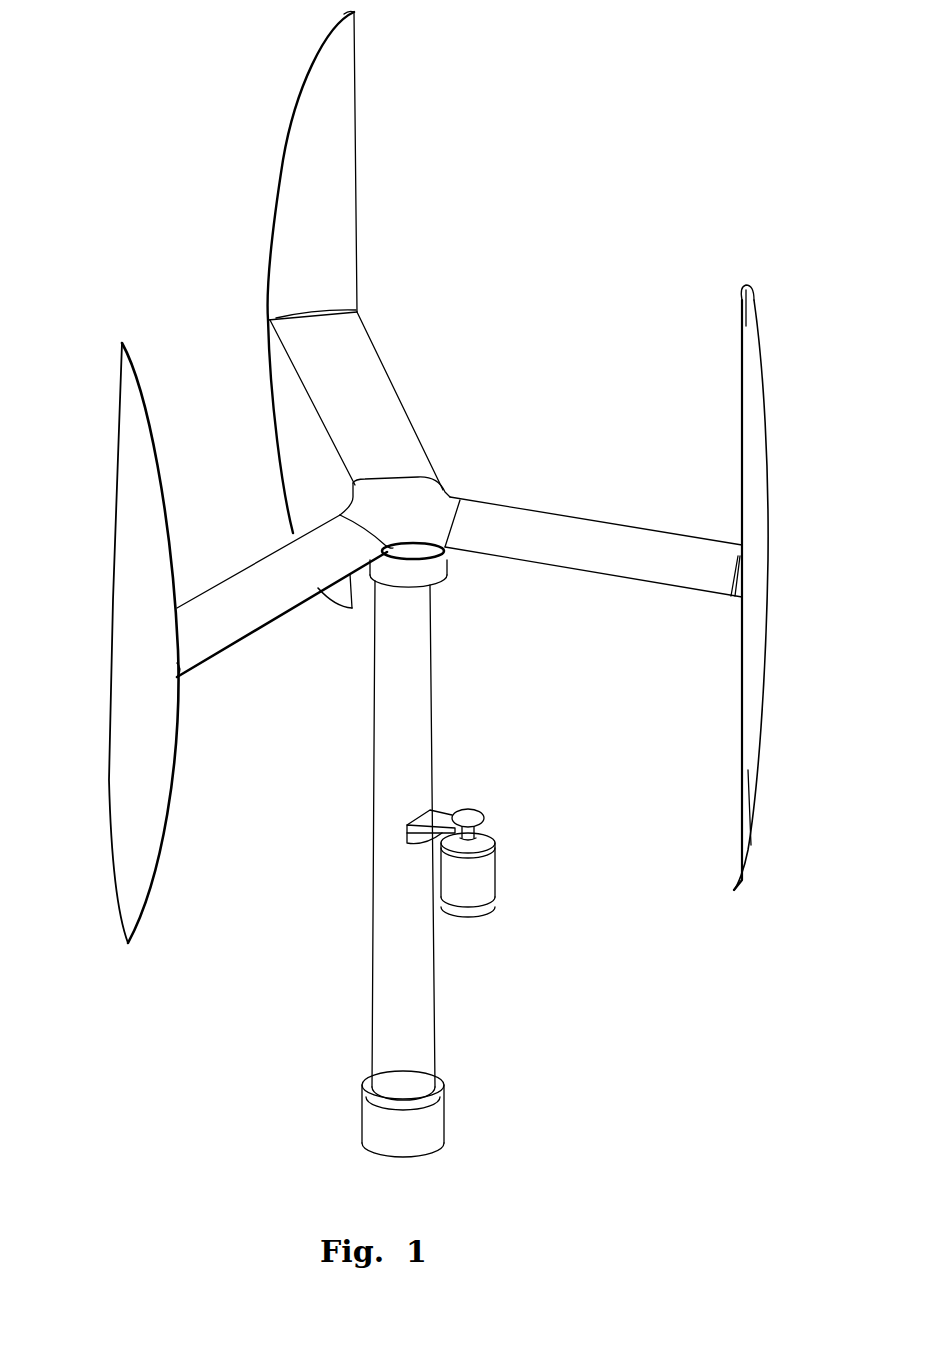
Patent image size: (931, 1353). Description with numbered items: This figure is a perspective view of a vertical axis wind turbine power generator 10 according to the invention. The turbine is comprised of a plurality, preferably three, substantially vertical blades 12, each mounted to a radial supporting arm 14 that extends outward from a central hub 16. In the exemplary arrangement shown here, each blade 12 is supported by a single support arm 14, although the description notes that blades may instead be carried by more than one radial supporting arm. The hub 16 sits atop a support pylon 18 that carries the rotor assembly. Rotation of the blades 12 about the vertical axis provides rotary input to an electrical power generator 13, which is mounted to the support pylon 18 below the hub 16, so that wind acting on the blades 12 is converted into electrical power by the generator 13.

The vertical axis wind turbine power generator 10 is at (576, 266).
The blade 12 is at (325, 204).
The generator 13 is at (492, 863).
The radial supporting arm 14 is at (381, 394).
The central hub 16 is at (459, 481).
The support pylon 18 is at (420, 953).